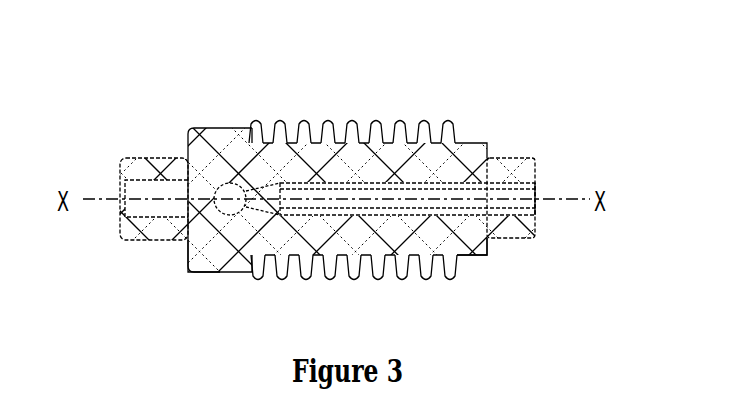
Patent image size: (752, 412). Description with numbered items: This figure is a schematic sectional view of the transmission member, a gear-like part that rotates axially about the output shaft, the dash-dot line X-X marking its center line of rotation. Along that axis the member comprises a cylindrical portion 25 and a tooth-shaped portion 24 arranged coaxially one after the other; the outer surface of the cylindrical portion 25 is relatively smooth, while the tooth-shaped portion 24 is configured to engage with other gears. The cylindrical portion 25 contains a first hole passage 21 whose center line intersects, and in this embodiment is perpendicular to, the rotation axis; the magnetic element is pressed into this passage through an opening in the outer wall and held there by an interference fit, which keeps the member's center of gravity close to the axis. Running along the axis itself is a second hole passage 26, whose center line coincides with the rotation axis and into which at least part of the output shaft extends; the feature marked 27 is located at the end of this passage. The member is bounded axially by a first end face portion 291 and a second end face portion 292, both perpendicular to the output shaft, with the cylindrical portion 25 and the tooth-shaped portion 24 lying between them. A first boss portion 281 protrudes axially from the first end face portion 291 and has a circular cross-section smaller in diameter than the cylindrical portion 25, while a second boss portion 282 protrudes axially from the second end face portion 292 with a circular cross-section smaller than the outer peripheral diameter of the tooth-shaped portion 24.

The first hole passage 21 is at (228, 195).
The tooth-shaped portion 24 is at (402, 119).
The cylindrical portion 25 is at (228, 126).
The second hole passage 26 is at (497, 182).
The tube outlet end 27 is at (535, 190).
The first boss portion 281 is at (150, 158).
The second boss portion 282 is at (495, 152).
The first end face portion 291 is at (188, 260).
The second end face portion 292 is at (488, 253).